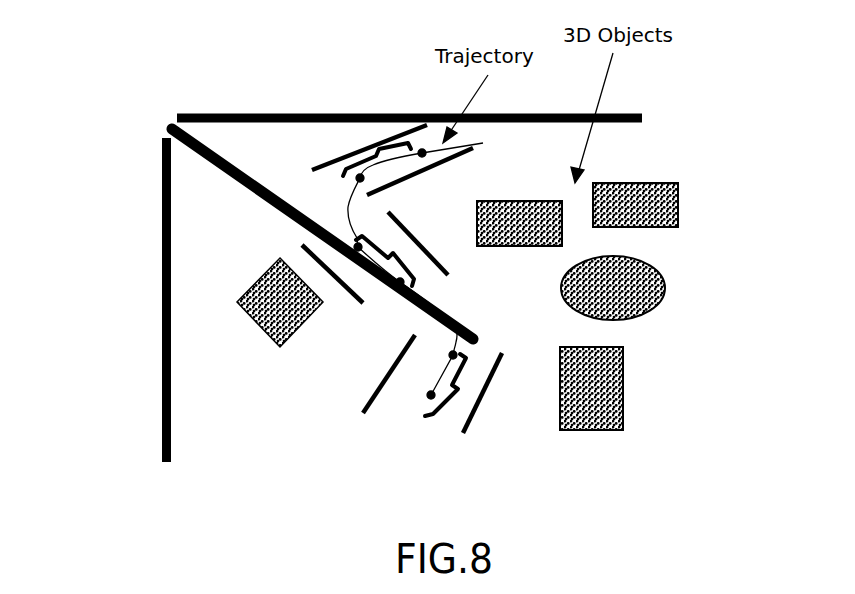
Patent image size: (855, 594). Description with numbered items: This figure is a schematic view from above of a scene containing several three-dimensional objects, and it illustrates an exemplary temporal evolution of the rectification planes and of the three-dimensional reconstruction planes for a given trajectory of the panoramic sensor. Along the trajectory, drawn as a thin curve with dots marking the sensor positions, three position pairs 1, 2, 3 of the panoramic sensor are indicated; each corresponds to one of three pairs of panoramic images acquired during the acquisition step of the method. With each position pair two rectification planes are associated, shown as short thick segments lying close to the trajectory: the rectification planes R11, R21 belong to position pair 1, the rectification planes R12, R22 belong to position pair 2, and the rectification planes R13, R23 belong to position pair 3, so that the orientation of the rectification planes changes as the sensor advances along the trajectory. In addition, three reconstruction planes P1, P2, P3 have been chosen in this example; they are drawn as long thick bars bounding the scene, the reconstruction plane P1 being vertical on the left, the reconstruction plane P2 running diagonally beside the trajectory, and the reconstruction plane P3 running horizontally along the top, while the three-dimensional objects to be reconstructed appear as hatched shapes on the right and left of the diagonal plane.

The reconstruction plane P1 is at (162, 452).
The reconstruction plane P2 is at (164, 130).
The reconstruction plane P3 is at (642, 118).
The position pair 1 is at (448, 385).
The position pair 2 is at (385, 257).
The position pair 3 is at (377, 150).
The rectification plane R11 is at (377, 391).
The rectification plane R12 is at (342, 291).
The rectification plane R13 is at (342, 151).
The rectification plane R21 is at (473, 413).
The rectification plane R22 is at (443, 245).
The rectification plane R23 is at (420, 177).